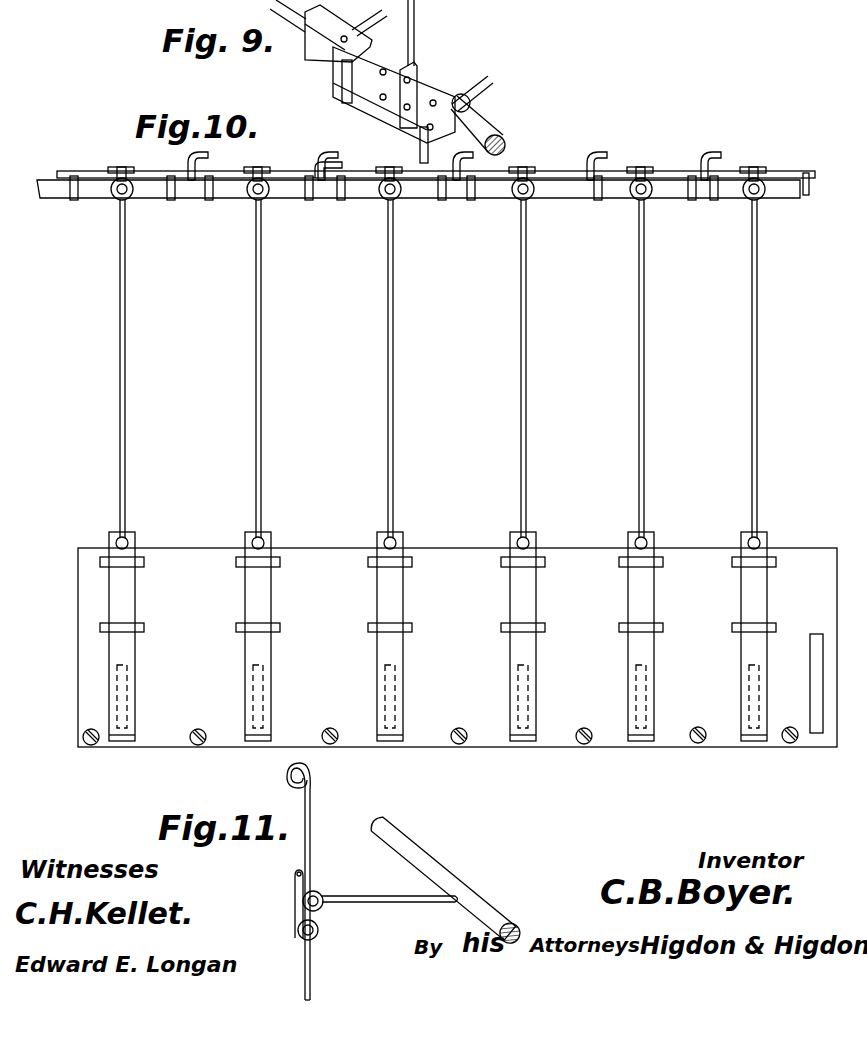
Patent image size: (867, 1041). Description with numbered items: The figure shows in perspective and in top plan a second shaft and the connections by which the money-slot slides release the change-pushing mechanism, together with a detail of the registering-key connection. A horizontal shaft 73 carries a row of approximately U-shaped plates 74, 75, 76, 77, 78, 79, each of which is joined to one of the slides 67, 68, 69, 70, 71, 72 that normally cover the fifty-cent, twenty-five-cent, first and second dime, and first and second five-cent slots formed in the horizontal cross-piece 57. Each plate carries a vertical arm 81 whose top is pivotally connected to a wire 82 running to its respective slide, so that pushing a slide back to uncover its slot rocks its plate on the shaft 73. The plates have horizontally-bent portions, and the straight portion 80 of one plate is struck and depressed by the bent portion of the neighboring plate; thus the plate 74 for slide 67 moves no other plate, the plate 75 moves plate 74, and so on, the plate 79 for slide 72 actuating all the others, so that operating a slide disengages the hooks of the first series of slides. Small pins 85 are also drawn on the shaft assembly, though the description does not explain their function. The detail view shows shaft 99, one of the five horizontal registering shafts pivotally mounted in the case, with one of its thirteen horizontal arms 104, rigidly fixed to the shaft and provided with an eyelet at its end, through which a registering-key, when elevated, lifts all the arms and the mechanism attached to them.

In FIG. 10, the horizontal cross-piece 57 is at (93, 746).
In FIG. 10, the slide 67 is at (773, 636).
In FIG. 10, the slide 68 is at (662, 636).
In FIG. 10, the slide 69 is at (545, 636).
In FIG. 10, the slide 70 is at (403, 613).
In FIG. 10, the slide 71 is at (283, 636).
In FIG. 10, the slide 72 is at (144, 636).
In FIG. 9, the horizontal shaft 73 is at (508, 134).
In FIG. 10, the horizontal shaft 73 is at (788, 198).
In FIG. 10, the plate 74 is at (795, 171).
In FIG. 10, the plate 75 is at (690, 178).
In FIG. 10, the plate 76 is at (560, 182).
In FIG. 10, the plate 77 is at (427, 180).
In FIG. 10, the plate 78 is at (296, 184).
In FIG. 9, the plate 79 is at (324, 81).
In FIG. 10, the plate 79 is at (148, 180).
In FIG. 9, the straight portion 80 is at (384, 120).
In FIG. 10, the straight portion 80 is at (207, 162).
In FIG. 9, the vertical arm 81 is at (416, 70).
In FIG. 10, the vertical arm 81 is at (748, 197).
In FIG. 10, the wire 82 is at (127, 308).
In FIG. 9, the pin 85 is at (399, 57).
In FIG. 11, the shaft 99 is at (433, 861).
In FIG. 11, the horizontal arm 104 is at (392, 873).